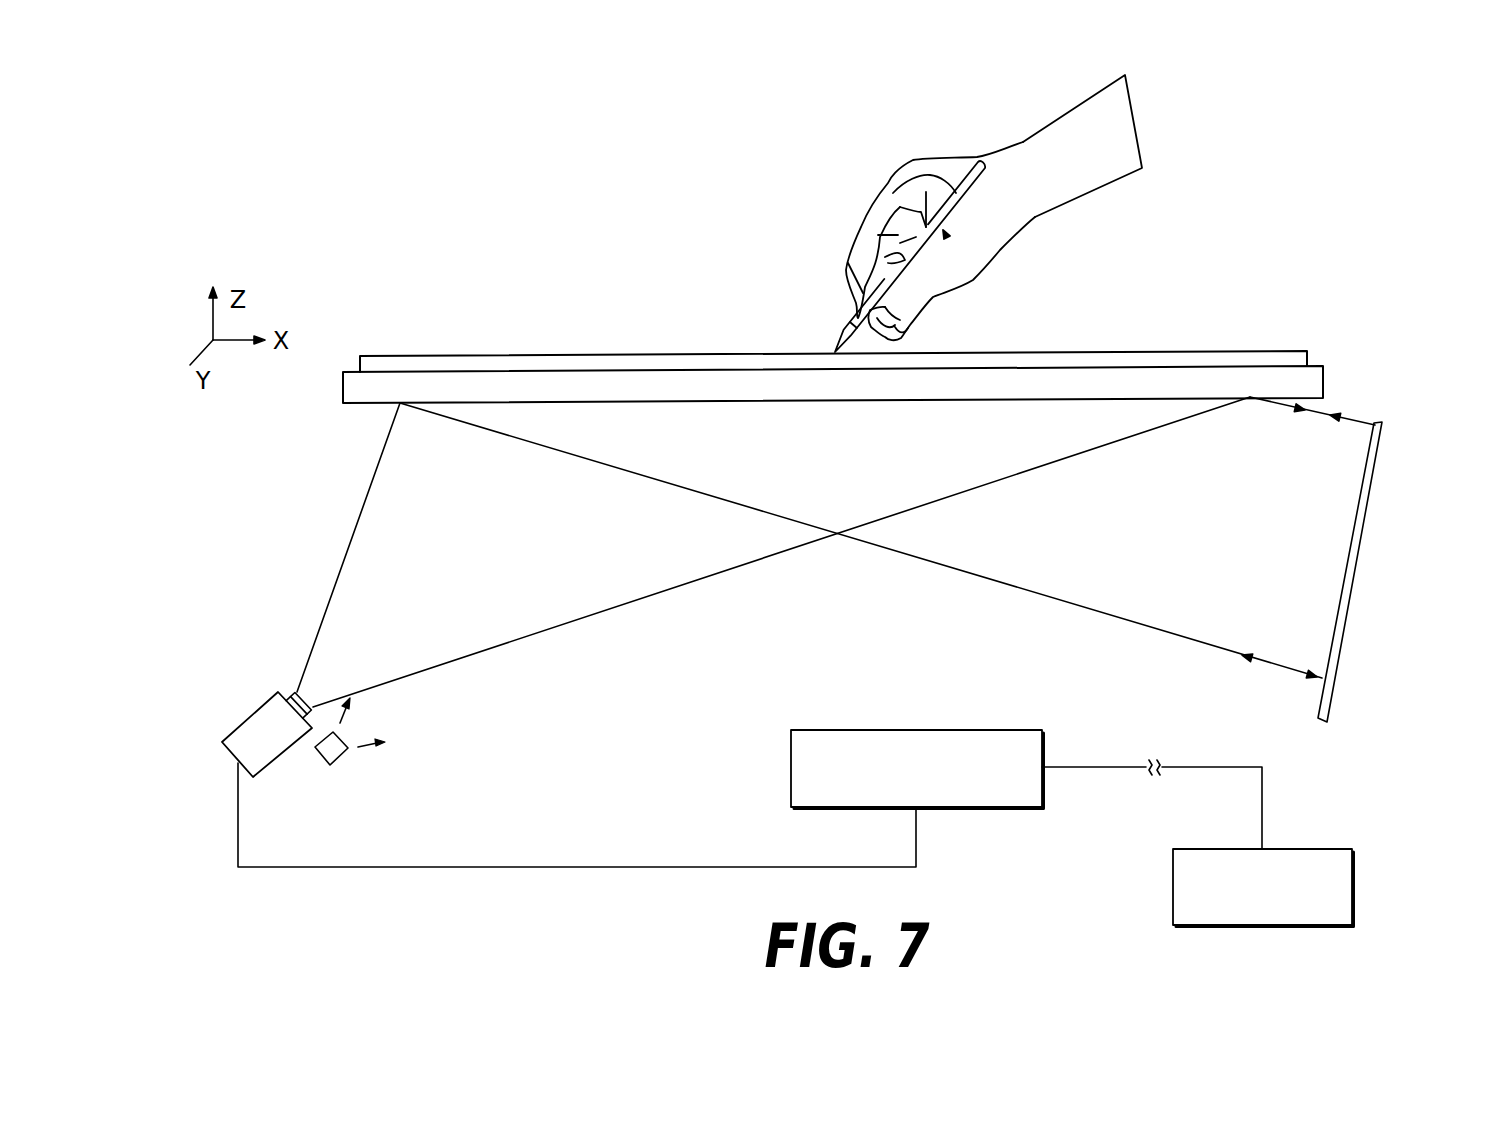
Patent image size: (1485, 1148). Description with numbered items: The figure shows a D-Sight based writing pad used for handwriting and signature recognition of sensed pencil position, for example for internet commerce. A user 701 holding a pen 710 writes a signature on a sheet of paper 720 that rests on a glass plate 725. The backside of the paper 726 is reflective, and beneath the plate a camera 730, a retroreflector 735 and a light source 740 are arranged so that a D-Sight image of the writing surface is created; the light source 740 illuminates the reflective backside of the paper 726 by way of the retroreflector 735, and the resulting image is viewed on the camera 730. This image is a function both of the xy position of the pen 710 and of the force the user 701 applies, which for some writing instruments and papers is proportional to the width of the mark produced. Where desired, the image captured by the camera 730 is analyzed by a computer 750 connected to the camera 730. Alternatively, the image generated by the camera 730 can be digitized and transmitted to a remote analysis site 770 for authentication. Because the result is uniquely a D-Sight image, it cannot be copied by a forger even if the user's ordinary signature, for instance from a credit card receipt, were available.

The user 701 is at (977, 213).
The pen 710 is at (888, 190).
The paper 720 is at (827, 358).
The glass plate 725 is at (343, 387).
The backside of the paper 726 is at (1183, 365).
The camera 730 is at (257, 705).
The retroreflector 735 is at (1347, 610).
The light source 740 is at (340, 758).
The computer 750 is at (963, 807).
The remote analysis site 770 is at (1352, 885).